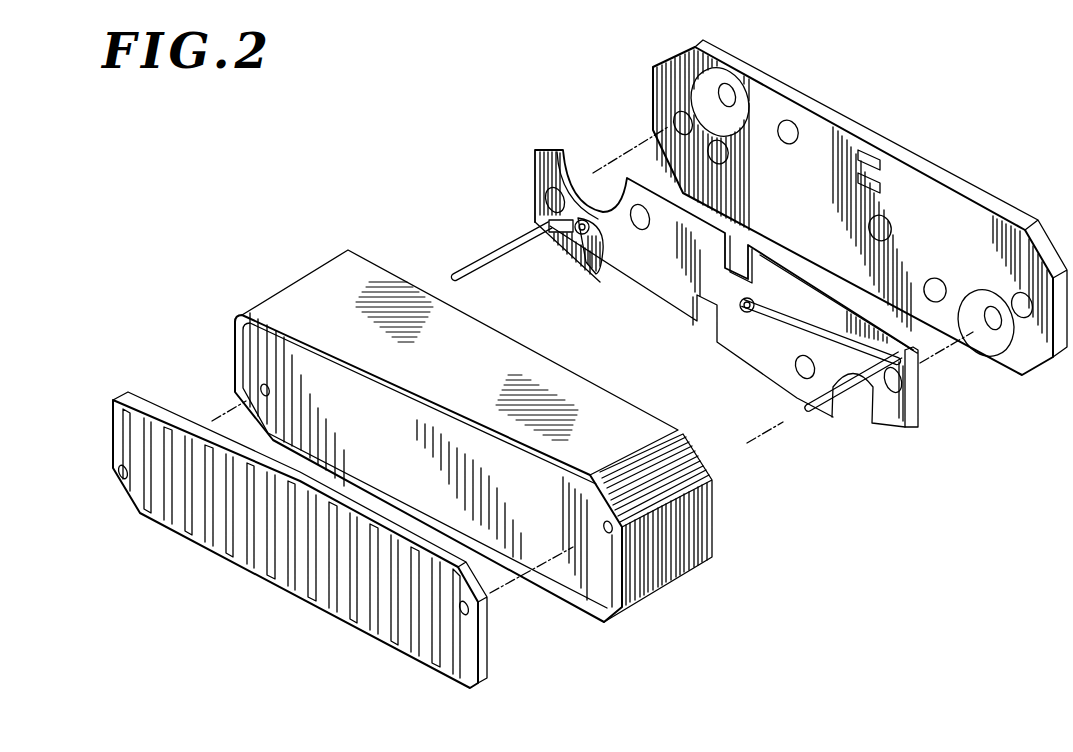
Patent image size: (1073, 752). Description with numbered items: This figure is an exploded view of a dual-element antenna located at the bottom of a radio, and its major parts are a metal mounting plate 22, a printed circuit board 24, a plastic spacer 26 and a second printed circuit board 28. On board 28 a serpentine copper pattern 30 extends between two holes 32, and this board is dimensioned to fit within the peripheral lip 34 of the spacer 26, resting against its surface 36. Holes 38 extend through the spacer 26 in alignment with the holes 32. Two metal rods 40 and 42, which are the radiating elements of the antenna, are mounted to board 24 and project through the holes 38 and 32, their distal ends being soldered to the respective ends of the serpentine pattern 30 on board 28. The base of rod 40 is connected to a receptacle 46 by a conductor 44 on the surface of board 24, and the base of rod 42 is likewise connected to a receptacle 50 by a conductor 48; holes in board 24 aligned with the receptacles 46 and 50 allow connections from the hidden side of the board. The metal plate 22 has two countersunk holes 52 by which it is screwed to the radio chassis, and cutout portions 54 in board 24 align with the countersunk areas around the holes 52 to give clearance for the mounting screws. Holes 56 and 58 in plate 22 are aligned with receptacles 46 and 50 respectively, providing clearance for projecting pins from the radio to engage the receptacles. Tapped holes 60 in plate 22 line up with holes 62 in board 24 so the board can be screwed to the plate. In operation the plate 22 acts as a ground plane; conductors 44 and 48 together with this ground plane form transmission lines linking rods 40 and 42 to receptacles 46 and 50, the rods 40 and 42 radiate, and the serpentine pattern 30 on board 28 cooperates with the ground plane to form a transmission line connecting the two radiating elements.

The metal mounting plate 22 is at (860, 218).
The printed circuit board 24 is at (684, 283).
The plastic spacer 26 is at (453, 447).
The printed circuit board 28 is at (306, 521).
The serpentine copper pattern 30 is at (336, 616).
The holes 32 is at (124, 478).
The peripheral lip 34 is at (243, 315).
The surface 36 is at (262, 340).
The holes 38 is at (262, 392).
The metal rod 40 is at (836, 405).
The metal rod 42 is at (484, 258).
The conductor 44 is at (782, 318).
The receptacle 46 is at (744, 312).
The conductor 48 is at (562, 250).
The receptacle 50 is at (597, 274).
The countersunk holes 52 is at (756, 55).
The cutout portions 54 is at (573, 165).
The hole 56 is at (893, 232).
The hole 58 is at (732, 155).
The tapped holes 60 is at (800, 128).
The holes 62 is at (645, 226).